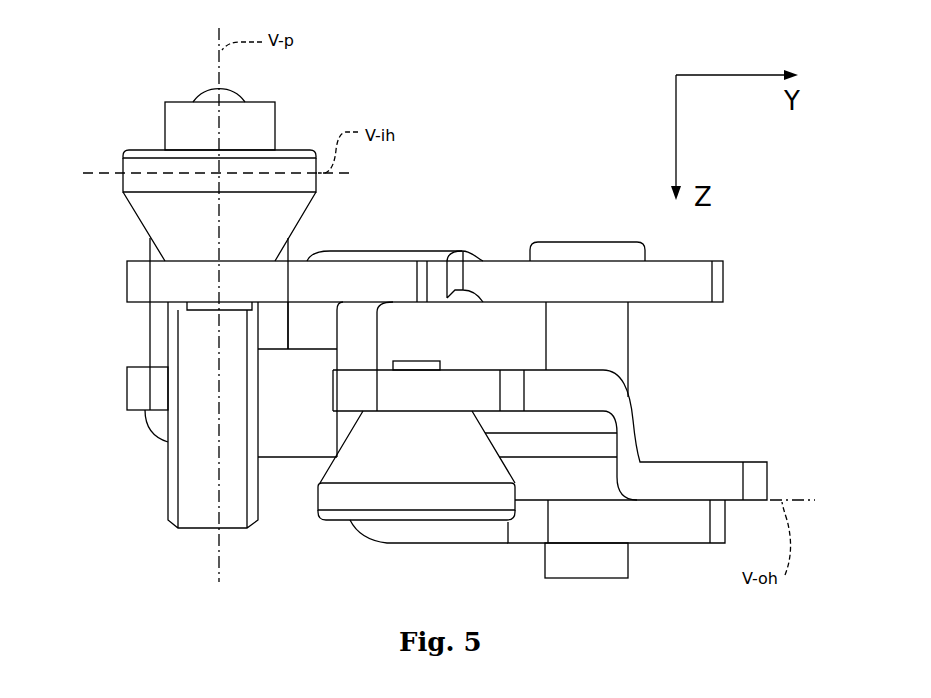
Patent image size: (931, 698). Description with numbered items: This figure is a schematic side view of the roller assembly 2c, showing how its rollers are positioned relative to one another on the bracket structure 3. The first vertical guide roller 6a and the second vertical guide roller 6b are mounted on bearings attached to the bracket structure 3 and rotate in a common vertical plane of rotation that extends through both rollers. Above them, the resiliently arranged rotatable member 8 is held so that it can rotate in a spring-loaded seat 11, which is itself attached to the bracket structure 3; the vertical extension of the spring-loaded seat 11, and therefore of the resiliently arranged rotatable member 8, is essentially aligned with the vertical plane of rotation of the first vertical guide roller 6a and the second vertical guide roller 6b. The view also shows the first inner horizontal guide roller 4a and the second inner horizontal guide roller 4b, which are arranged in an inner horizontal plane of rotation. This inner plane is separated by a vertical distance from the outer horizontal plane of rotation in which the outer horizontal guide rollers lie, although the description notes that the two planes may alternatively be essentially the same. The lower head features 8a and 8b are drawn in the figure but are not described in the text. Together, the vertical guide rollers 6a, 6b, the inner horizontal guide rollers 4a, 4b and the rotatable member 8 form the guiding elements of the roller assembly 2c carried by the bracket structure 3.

The roller assembly 2c is at (506, 54).
The bracket structure 3 is at (554, 84).
The resiliently arranged rotatable member 8 is at (207, 93).
The spring-loaded seat 11 is at (190, 131).
The first inner horizontal guide roller 4a is at (122, 165).
The second inner horizontal guide roller 4b is at (122, 190).
The first vertical guide roller 6a is at (168, 468).
The second vertical guide roller 6b is at (168, 492).
The upper head portion 8a is at (316, 494).
The lower head portion 8b is at (316, 508).